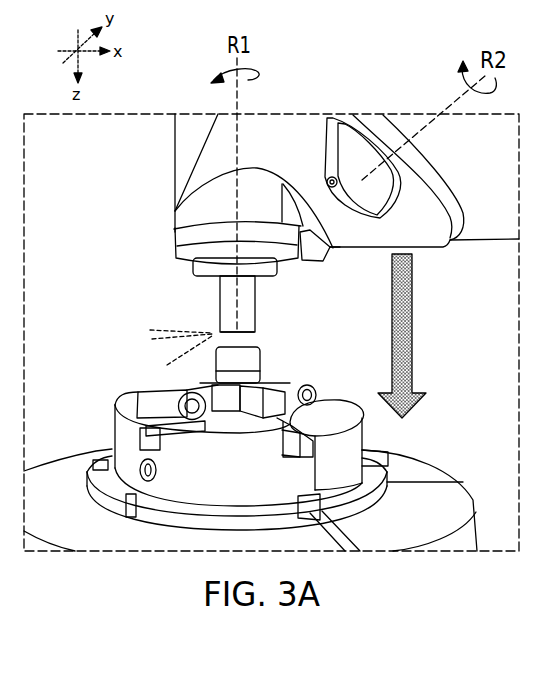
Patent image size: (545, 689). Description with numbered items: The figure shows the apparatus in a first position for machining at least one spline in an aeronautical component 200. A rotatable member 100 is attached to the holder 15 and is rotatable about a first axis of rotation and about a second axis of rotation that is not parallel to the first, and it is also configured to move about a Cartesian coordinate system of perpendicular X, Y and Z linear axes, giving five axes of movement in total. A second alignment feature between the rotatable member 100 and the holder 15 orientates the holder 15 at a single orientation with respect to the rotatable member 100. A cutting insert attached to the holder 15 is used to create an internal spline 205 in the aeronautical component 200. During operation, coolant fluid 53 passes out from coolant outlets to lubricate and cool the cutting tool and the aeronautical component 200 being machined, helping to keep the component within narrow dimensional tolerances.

The rotatable member 100 is at (300, 150).
The holder 15 is at (217, 308).
The coolant fluid 53 is at (216, 330).
The internal spline 205 is at (208, 338).
The aeronautical component 200 is at (208, 365).